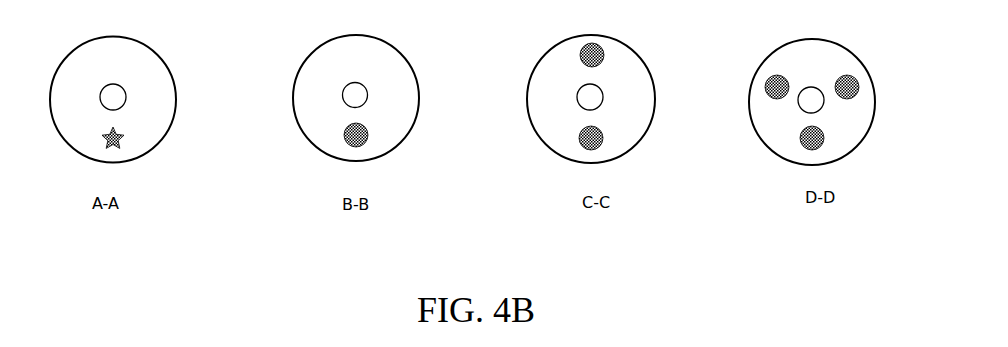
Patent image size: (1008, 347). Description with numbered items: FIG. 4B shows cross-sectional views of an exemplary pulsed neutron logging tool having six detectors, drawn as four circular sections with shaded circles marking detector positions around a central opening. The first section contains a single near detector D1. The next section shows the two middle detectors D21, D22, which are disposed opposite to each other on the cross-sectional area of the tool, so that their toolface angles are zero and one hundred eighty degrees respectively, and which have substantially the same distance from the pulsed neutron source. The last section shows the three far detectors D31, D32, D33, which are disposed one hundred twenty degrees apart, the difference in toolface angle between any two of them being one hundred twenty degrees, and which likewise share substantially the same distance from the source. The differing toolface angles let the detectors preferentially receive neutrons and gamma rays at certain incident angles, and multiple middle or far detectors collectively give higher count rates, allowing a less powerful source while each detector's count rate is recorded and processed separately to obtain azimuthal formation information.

The detector D1 is at (369, 135).
The middle detector D21 is at (609, 133).
The middle detector D22 is at (609, 62).
The far detector D31 is at (830, 136).
The far detector D32 is at (833, 76).
The far detector D33 is at (778, 98).